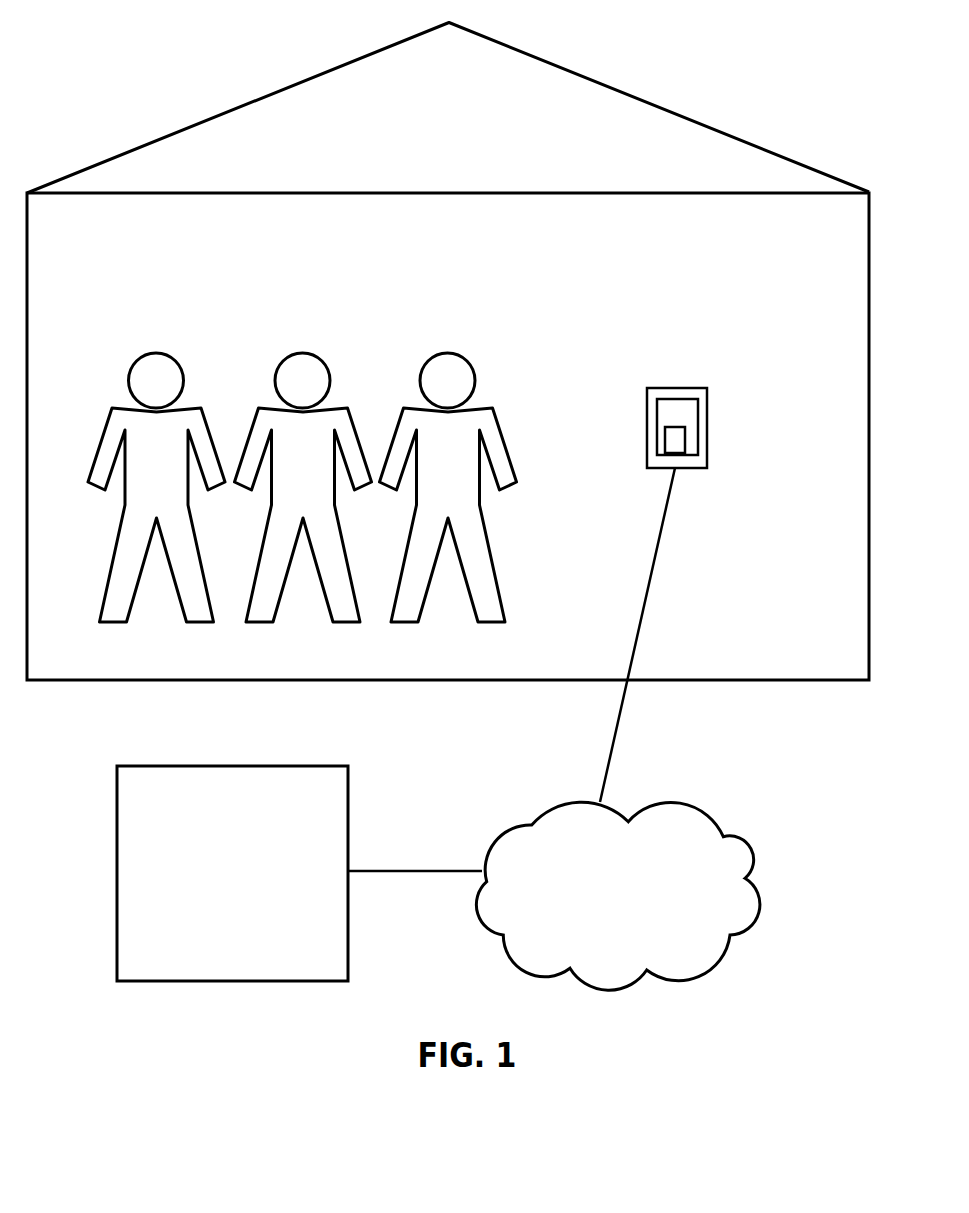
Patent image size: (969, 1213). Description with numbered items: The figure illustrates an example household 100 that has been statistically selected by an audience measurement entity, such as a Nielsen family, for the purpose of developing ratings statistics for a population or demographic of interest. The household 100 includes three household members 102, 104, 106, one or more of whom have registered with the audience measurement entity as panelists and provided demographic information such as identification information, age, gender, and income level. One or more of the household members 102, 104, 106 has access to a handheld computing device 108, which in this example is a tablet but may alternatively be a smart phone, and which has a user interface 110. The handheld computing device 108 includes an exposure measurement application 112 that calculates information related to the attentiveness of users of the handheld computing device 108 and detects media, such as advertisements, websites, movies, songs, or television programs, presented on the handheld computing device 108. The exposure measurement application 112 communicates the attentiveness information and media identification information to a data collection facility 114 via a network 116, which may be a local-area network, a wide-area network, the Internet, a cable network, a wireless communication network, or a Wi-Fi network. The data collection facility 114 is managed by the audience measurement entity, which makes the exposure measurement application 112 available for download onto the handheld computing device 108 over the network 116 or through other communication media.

The household 100 is at (202, 122).
The household member 102 is at (157, 353).
The household member 104 is at (303, 353).
The household member 106 is at (448, 353).
The handheld computing device 108 is at (678, 388).
The user interface 110 is at (697, 427).
The exposure measurement application 112 is at (685, 446).
The data collection facility 114 is at (213, 929).
The network 116 is at (683, 803).